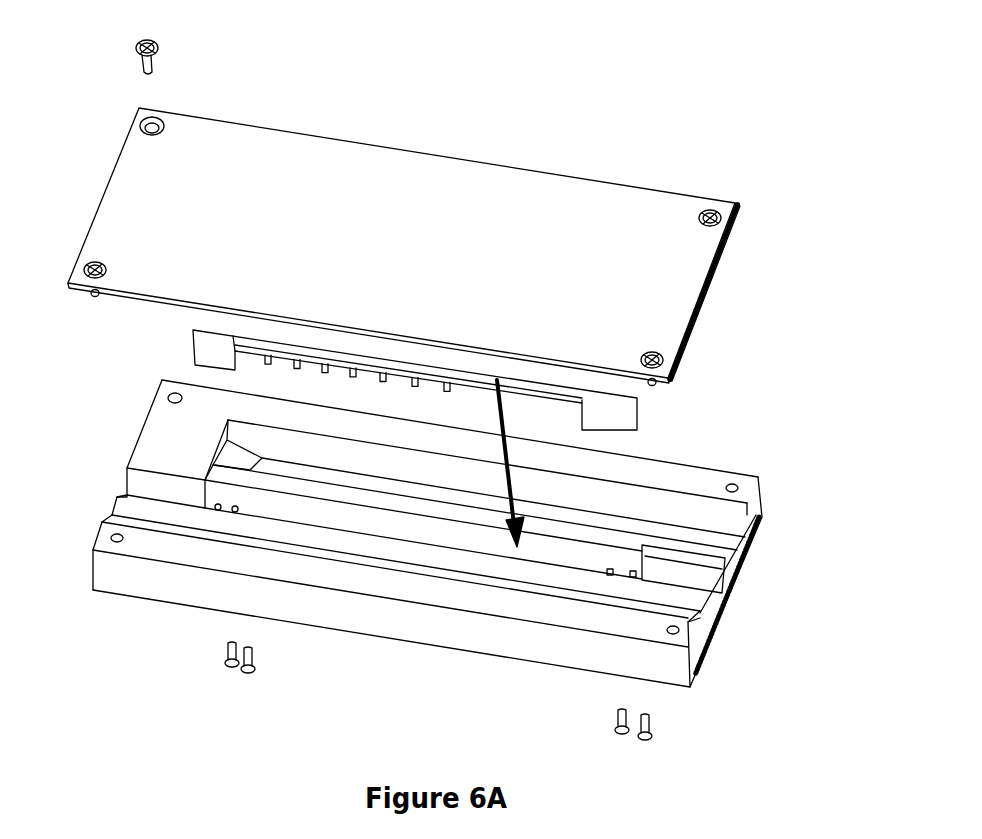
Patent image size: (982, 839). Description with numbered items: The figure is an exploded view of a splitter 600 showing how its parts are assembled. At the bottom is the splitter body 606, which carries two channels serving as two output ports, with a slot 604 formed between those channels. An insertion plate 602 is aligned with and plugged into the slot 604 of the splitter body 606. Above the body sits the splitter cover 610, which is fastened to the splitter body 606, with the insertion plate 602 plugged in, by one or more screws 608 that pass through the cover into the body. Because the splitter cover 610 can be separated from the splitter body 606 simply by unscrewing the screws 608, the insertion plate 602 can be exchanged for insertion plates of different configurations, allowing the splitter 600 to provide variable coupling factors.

The splitter 600 is at (687, 73).
The insertion plate 602 is at (640, 418).
The slot 604 is at (553, 552).
The splitter body 606 is at (738, 486).
The screws 608 is at (159, 57).
The splitter cover 610 is at (682, 197).